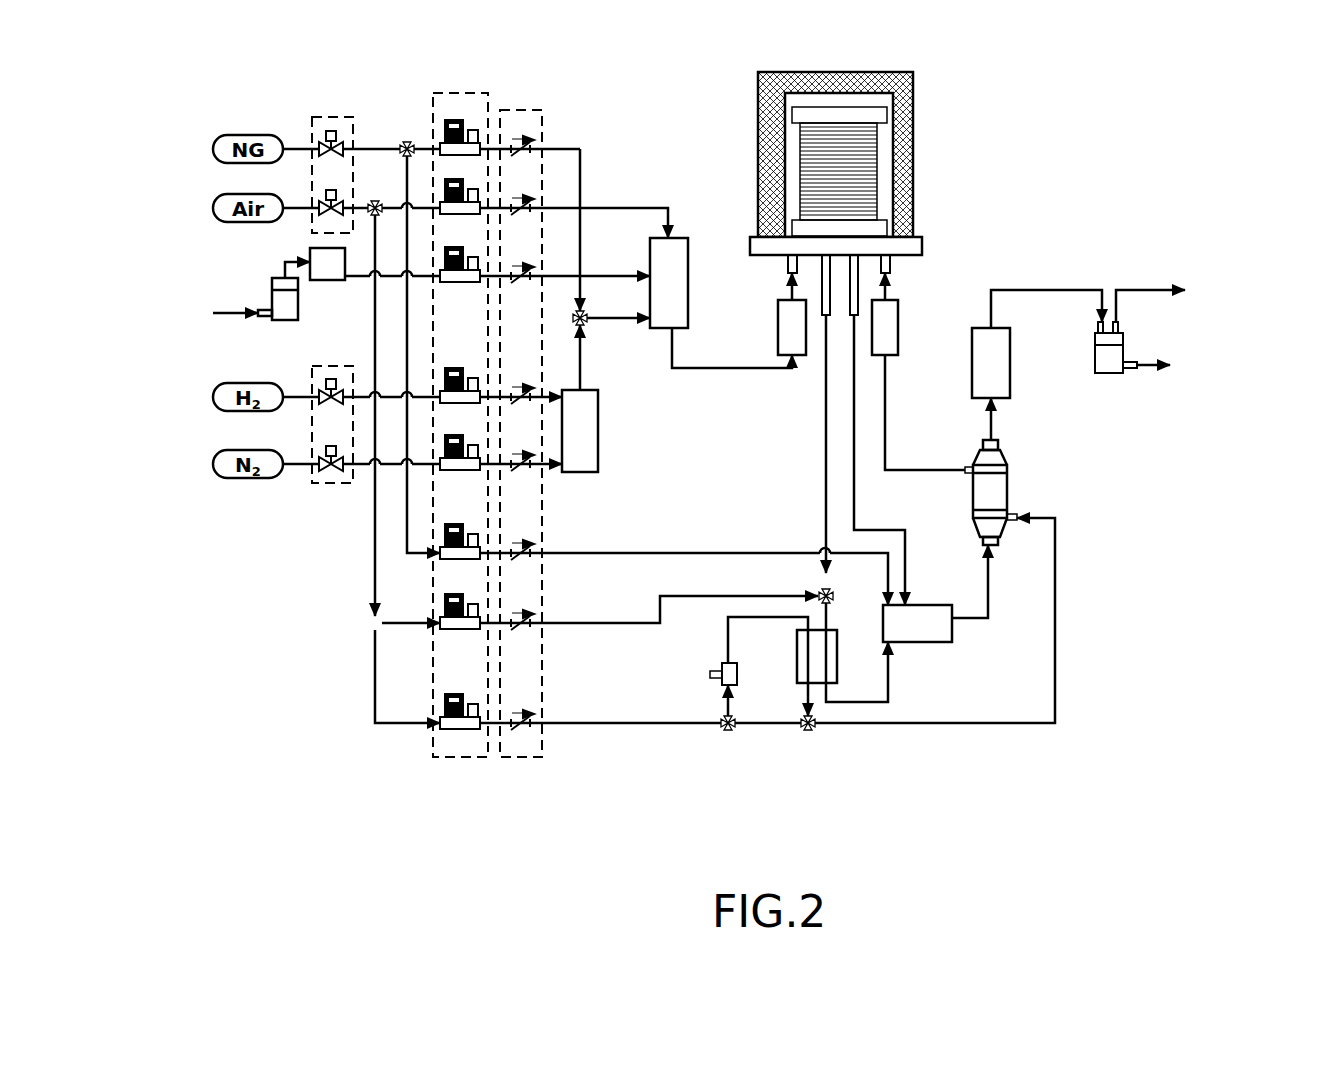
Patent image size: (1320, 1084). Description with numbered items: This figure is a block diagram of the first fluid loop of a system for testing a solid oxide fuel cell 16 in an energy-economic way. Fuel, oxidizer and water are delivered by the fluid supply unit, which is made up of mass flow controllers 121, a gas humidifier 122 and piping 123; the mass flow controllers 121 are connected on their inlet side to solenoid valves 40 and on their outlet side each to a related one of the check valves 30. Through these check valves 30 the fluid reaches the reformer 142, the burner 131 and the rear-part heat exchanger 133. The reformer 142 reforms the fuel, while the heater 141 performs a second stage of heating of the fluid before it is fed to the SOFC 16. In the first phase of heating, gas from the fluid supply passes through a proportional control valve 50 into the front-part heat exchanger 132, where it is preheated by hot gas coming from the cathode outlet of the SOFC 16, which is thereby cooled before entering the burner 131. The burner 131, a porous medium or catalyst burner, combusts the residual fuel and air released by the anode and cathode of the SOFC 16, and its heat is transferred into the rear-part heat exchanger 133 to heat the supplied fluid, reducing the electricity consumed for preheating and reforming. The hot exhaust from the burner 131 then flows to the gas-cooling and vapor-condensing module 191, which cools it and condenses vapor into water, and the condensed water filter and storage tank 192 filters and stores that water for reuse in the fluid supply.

The solid oxide fuel cell 16 is at (913, 92).
The check valves 30 is at (530, 758).
The solenoid valves 40 is at (312, 181).
The proportional control valve 50 is at (710, 676).
The mass flow controllers 121 is at (432, 752).
The gas humidifier 122 is at (598, 444).
The piping 123 is at (380, 147).
The burner 131 is at (952, 633).
The front-part heat exchanger 132 is at (837, 672).
The rear-part heat exchanger 133 is at (1007, 483).
The heater 141 is at (778, 318).
The reformer 142 is at (680, 236).
The gas-cooling and vapor-condensing module 191 is at (1010, 385).
The condensed water filter and storage tank 192 is at (1123, 336).